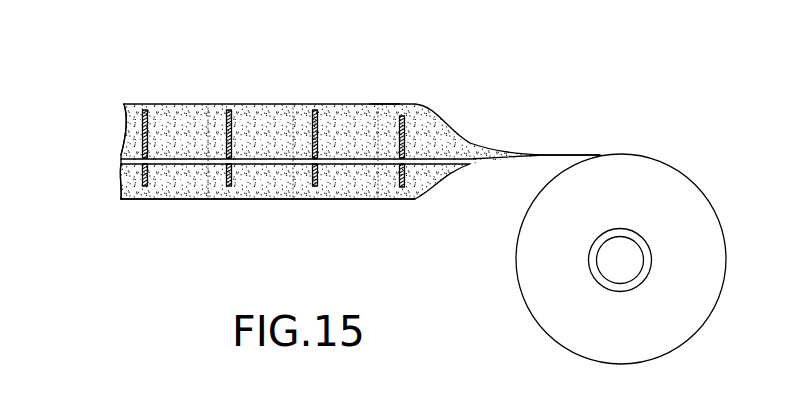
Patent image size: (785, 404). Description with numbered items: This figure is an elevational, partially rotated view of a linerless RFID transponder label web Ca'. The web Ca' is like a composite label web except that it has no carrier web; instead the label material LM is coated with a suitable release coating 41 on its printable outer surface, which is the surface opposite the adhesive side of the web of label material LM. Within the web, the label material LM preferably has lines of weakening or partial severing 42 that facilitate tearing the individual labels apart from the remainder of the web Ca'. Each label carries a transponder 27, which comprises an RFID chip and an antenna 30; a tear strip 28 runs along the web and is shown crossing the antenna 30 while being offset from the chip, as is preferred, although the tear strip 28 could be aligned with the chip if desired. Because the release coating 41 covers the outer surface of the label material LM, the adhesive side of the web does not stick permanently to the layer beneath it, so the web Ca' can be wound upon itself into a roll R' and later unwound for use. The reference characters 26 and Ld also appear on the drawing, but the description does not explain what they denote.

The sheet member 26 is at (193, 122).
The transponder 27 is at (148, 108).
The tear strip 28 is at (277, 166).
The antenna 30 is at (140, 127).
The release coating 41 is at (562, 170).
The lines of weakening or partial severing 42 is at (208, 183).
The lead distance Ld is at (371, 105).
The label material LM is at (188, 200).
The linerless web Ca' is at (136, 228).
The roll R' is at (624, 230).